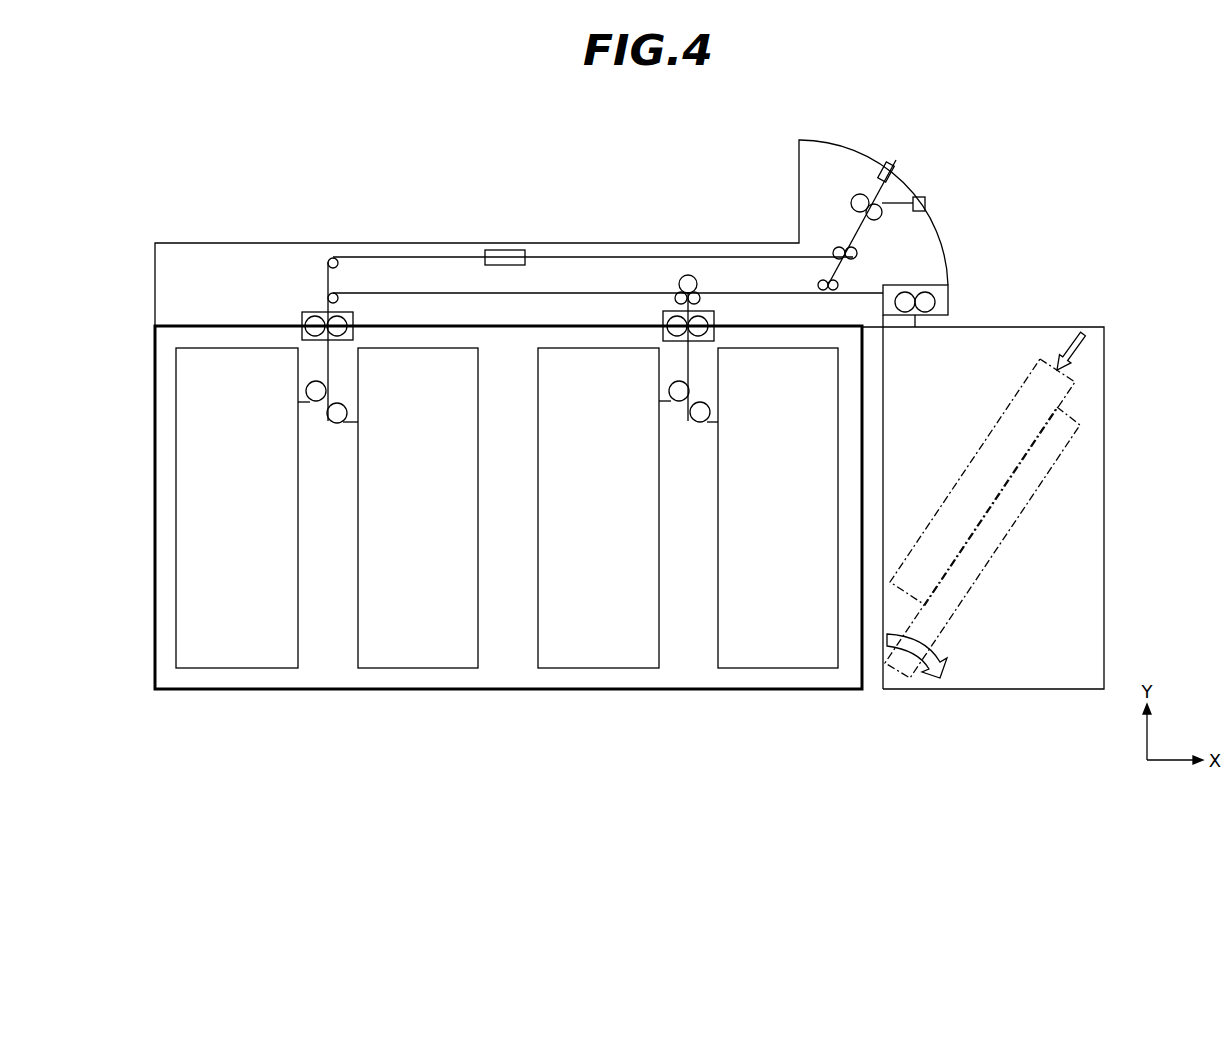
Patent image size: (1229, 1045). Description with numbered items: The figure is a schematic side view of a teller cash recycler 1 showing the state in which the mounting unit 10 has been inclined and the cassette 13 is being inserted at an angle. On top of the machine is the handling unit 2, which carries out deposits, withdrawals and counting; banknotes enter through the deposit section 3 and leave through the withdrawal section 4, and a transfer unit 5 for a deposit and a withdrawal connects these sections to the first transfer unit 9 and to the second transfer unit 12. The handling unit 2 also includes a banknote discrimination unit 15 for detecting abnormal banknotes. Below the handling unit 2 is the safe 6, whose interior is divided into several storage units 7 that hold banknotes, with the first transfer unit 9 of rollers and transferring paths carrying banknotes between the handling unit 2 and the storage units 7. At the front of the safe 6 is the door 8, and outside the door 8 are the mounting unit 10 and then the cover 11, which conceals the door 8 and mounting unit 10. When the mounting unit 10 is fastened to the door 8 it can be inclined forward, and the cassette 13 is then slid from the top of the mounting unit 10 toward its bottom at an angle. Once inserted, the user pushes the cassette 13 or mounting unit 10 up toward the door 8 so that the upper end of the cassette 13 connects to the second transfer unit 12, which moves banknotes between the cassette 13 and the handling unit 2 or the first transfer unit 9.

The teller cash recycler 1 is at (682, 119).
The handling unit 2 is at (203, 243).
The deposit section 3 is at (893, 166).
The withdrawal section 4 is at (927, 204).
The transfer unit for a deposit and a withdrawal 5 is at (843, 227).
The safe 6 is at (151, 472).
The storage unit 7 is at (196, 413).
The door 8 is at (868, 681).
The first transfer unit 9 is at (580, 240).
The cassette mounting unit 10 is at (905, 673).
The cover 11 is at (1093, 608).
The second transfer unit 12 is at (930, 280).
The cassette 13 is at (1057, 385).
The banknote discrimination unit 15 is at (503, 250).